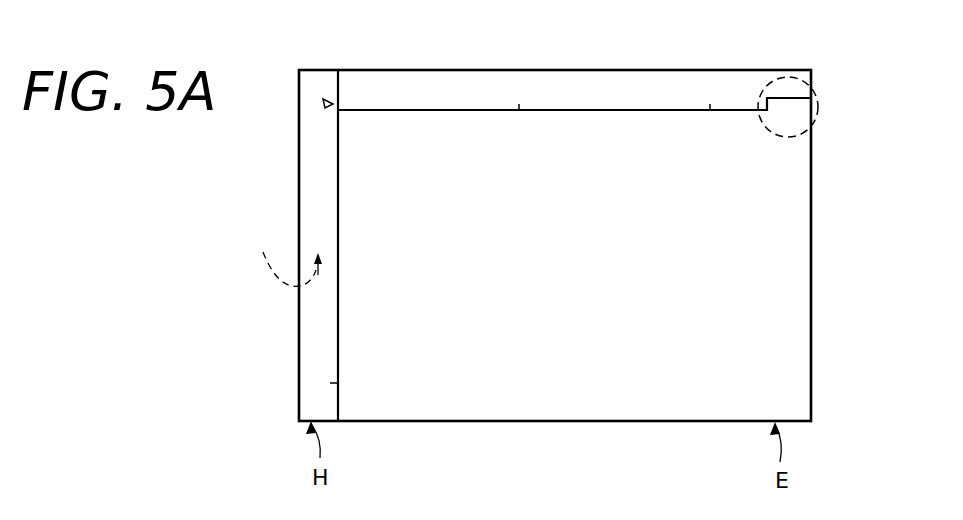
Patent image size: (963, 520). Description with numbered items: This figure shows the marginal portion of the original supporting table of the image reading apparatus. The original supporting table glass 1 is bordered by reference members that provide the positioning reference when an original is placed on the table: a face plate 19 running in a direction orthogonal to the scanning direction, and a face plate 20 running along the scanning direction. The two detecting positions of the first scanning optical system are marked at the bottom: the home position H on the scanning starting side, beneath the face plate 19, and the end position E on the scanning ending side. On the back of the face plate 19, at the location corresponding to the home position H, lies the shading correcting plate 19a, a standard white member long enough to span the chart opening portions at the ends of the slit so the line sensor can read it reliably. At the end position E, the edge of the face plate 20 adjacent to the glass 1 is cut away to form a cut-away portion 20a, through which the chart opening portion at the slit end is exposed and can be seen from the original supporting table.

The original supporting table glass 1 is at (490, 413).
The face plate 19 is at (322, 77).
The shading correcting plate 19a is at (282, 258).
The face plate 20 is at (635, 82).
The cut-away portion 20a is at (811, 76).